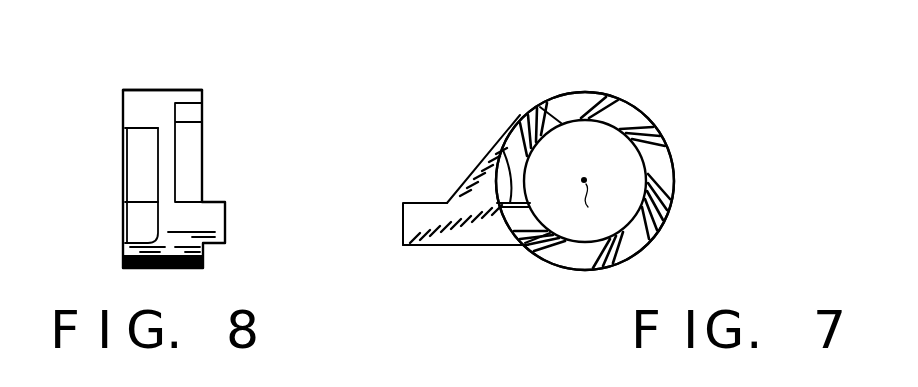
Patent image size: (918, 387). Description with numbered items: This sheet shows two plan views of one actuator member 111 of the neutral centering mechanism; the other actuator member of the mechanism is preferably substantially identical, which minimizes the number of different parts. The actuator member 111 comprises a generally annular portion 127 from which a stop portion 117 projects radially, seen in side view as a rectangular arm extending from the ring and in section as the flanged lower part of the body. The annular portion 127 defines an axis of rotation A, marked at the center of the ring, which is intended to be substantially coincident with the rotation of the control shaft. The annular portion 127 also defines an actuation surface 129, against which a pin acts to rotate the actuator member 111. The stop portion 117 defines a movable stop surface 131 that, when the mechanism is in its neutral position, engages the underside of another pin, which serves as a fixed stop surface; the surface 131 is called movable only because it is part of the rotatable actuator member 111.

In FIG. 8, the actuator member 111 is at (162, 80).
In FIG. 7, the actuator member 111 is at (553, 80).
In FIG. 8, the annular portion 127 is at (127, 108).
In FIG. 7, the annular portion 127 is at (655, 149).
In FIG. 8, the actuation surface 129 is at (183, 200).
In FIG. 7, the actuation surface 129 is at (503, 140).
In FIG. 8, the movable stop surface 131 is at (137, 200).
In FIG. 7, the movable stop surface 131 is at (417, 202).
In FIG. 8, the stop portion 117 is at (137, 222).
In FIG. 7, the stop portion 117 is at (460, 234).